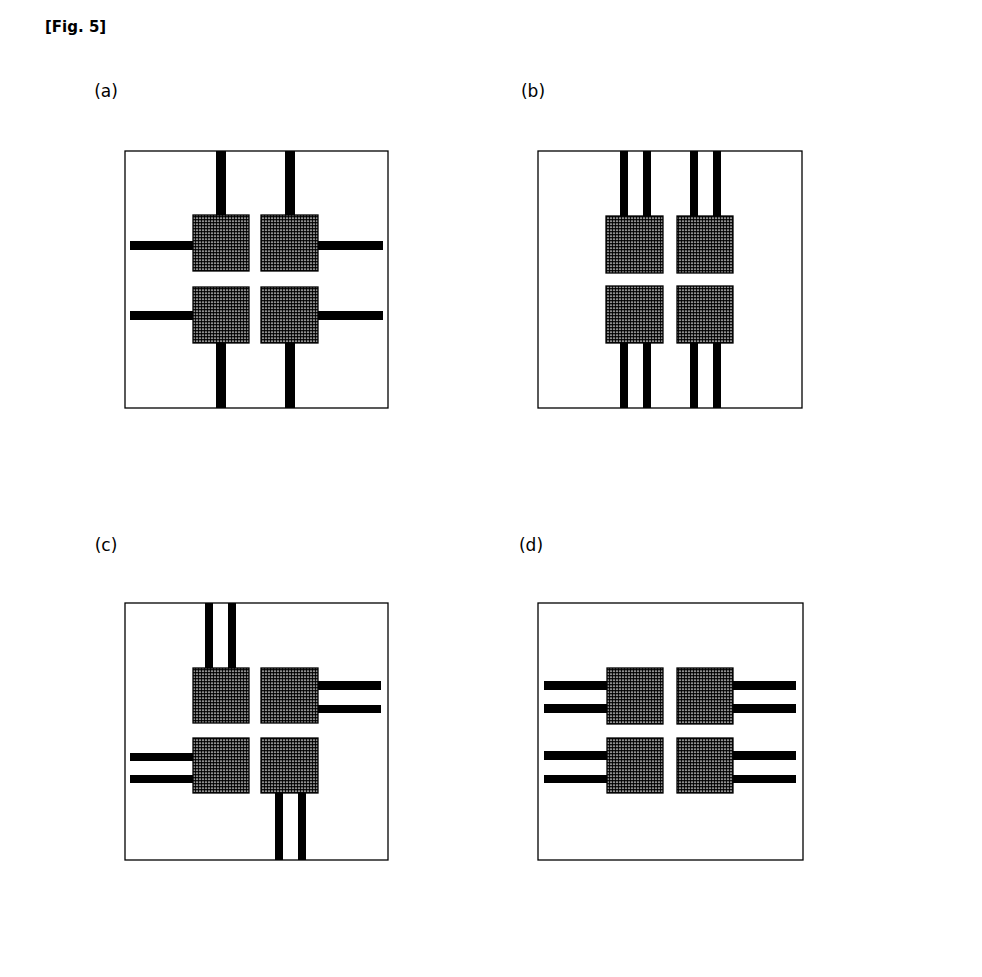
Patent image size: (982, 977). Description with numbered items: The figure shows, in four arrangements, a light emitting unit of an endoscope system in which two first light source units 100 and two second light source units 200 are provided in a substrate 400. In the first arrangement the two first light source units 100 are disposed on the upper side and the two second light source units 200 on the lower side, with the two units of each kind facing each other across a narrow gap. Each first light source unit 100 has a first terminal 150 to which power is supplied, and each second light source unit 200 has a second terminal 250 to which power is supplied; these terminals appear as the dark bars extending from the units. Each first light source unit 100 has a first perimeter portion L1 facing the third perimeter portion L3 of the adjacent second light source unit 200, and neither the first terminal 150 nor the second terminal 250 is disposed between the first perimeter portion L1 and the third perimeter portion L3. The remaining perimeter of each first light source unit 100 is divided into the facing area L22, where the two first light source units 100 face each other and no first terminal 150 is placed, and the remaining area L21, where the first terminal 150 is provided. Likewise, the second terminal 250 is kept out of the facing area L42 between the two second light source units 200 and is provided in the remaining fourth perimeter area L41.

The first light source unit 100 is at (232, 207).
The first terminal 150 is at (208, 158).
The second light source unit 200 is at (183, 297).
The second terminal 250 is at (145, 313).
The substrate 400 is at (367, 143).
The first perimeter portion L1 is at (200, 270).
The third perimeter portion L3 is at (200, 277).
The second perimeter portion area L21 is at (198, 205).
The facing second perimeter portion area L22 is at (245, 215).
The fourth perimeter portion area L41 is at (200, 335).
The facing fourth perimeter portion area L42 is at (248, 332).